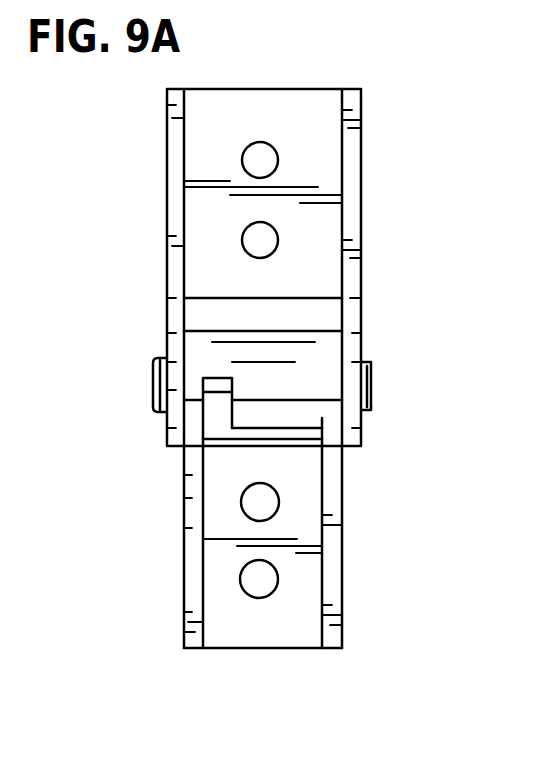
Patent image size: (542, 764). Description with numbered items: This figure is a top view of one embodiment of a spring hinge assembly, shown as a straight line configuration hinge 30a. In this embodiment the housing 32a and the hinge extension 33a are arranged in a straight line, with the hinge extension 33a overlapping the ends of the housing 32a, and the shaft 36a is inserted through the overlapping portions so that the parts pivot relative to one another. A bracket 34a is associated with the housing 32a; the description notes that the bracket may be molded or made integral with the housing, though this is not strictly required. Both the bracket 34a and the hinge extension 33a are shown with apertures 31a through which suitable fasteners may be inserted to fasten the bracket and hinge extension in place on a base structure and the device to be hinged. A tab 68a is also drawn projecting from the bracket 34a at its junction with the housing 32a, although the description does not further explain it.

The hinge 30a is at (375, 88).
The apertures 31a is at (266, 155).
The housing 32a is at (313, 362).
The hinge extension 33a is at (323, 368).
The bracket 34a is at (305, 523).
The shaft 36a is at (157, 373).
The tab 68a is at (220, 415).